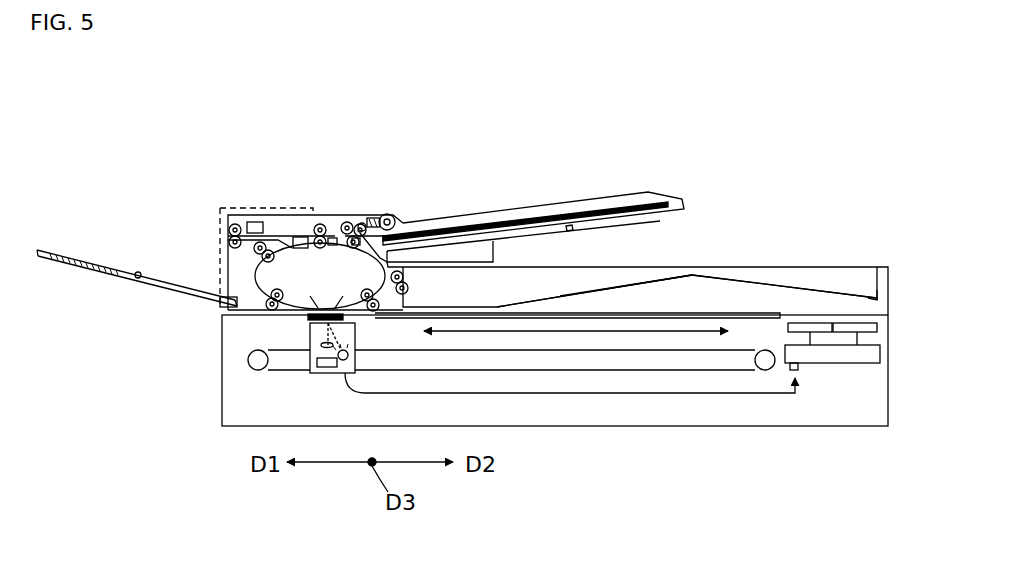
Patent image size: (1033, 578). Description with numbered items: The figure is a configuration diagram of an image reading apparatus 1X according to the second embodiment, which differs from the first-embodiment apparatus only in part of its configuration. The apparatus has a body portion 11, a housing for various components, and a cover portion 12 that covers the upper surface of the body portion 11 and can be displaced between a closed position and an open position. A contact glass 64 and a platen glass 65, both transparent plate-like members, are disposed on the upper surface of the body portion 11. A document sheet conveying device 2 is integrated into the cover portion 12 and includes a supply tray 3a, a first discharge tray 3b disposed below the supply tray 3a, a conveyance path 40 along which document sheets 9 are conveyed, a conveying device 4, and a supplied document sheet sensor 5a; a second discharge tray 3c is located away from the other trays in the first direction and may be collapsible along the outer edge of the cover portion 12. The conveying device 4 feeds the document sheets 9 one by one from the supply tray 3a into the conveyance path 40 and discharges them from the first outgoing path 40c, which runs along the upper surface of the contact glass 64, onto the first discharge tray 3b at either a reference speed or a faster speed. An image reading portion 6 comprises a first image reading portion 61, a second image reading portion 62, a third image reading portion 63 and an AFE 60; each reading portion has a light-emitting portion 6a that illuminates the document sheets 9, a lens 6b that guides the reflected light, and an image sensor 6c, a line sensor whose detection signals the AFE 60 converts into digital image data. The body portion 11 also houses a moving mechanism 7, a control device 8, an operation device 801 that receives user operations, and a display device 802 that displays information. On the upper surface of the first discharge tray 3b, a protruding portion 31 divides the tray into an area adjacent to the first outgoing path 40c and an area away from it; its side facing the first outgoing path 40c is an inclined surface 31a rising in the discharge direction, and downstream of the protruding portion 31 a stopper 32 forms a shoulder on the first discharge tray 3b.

The image reading apparatus 1X is at (493, 292).
The document sheet conveying device 2 is at (444, 200).
The supply tray 3a is at (517, 240).
The first discharge tray 3b is at (739, 273).
The second discharge tray 3c is at (148, 285).
The conveying device 4 is at (294, 218).
The supplied document sheet sensor 5a is at (573, 229).
The image reading portion 6 is at (383, 373).
The light-emitting portion 6a is at (350, 357).
The lens 6b is at (322, 346).
The image sensor 6c is at (322, 368).
The moving mechanism 7 is at (246, 360).
The control device 8 is at (881, 356).
The document sheet 9 is at (552, 218).
The body portion 11 is at (213, 422).
The cover portion 12 is at (890, 288).
The protruding portion 31 is at (680, 266).
The inclined surface 31a is at (612, 282).
The stopper 32 is at (875, 286).
The conveyance path 40 is at (314, 236).
The first outgoing path 40c is at (373, 283).
The AFE (Analog Front End) 60 is at (800, 368).
The first image reading portion 61 is at (345, 373).
The second image reading portion 62 is at (292, 237).
The third image reading portion 63 is at (256, 221).
The contact glass 64 is at (345, 321).
The platen glass 65 is at (757, 312).
The operation device 801 is at (814, 323).
The display device 802 is at (878, 328).